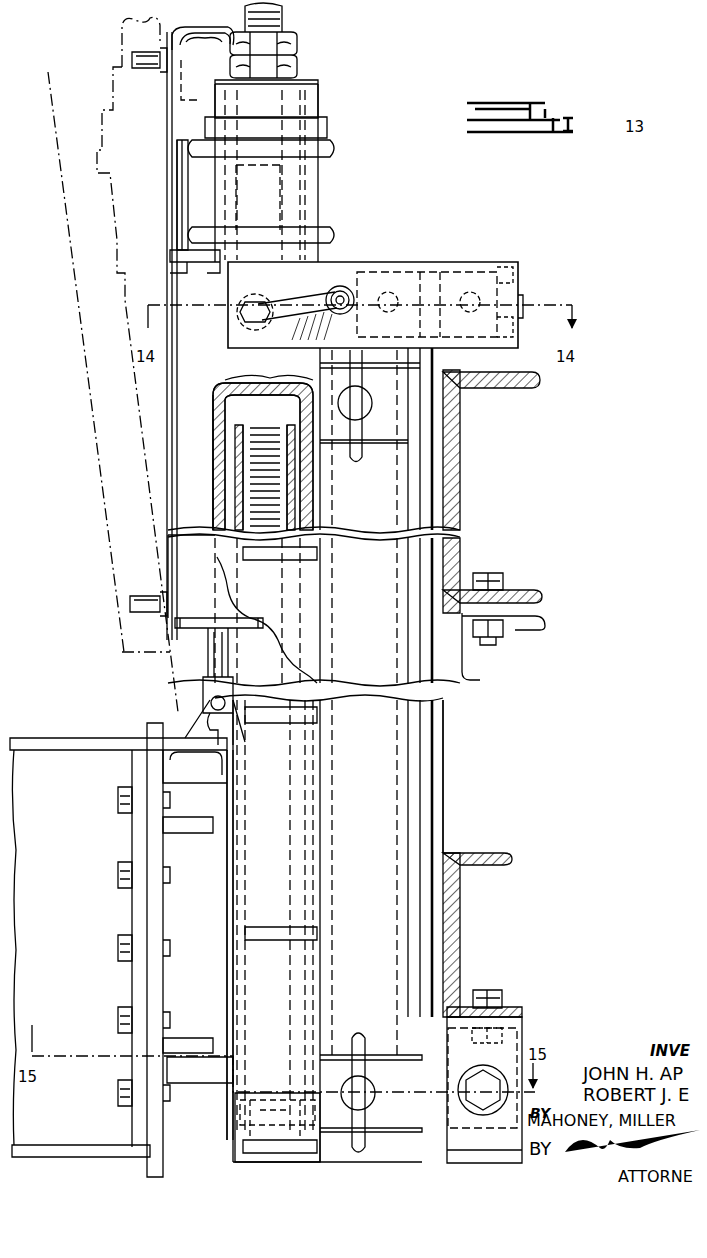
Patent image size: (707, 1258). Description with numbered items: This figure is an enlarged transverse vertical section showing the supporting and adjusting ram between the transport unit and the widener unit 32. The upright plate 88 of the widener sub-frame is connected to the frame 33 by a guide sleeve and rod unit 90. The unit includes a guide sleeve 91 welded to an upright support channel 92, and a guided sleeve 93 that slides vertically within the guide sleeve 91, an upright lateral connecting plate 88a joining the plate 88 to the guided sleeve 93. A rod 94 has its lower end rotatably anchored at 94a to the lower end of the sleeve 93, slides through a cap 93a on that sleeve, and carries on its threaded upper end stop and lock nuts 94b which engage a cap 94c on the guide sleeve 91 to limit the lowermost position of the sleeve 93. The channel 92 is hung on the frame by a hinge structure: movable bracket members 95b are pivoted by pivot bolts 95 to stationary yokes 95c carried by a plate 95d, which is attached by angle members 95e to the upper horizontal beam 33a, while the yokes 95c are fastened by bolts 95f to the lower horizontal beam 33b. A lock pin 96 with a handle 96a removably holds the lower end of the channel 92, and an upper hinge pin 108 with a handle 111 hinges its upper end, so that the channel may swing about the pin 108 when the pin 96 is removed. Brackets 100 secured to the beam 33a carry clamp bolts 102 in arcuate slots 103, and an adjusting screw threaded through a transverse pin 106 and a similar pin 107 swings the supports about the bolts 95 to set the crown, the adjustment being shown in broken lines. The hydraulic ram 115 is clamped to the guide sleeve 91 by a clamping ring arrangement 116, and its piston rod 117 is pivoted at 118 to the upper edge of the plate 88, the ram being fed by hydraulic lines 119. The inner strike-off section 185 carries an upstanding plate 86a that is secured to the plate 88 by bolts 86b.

The widener unit 32 is at (60, 736).
The frame 33 is at (540, 590).
The upper horizontal beam 33a is at (462, 478).
The lower horizontal beam 33b is at (462, 915).
The upstanding plate 86a is at (138, 745).
The bolts 86b is at (118, 805).
The upright plate 88 is at (152, 895).
The lateral connecting plate 88a is at (216, 945).
The guide sleeve and rod unit 90 is at (208, 493).
The guide sleeve 91 is at (327, 107).
The upright support channel 92 is at (393, 800).
The guided sleeve 93 is at (305, 197).
The cap 93a is at (280, 163).
The rod 94 is at (265, 12).
The rotatable anchor 94a is at (285, 1150).
The stop and lock nuts 94b is at (300, 72).
The cap 94c is at (318, 82).
The pivot bolts 95 is at (490, 1083).
The bracket members 95b is at (383, 415).
The yokes 95c is at (505, 1040).
The plate 95d is at (446, 832).
The angle members 95e is at (462, 655).
The bolts 95f is at (497, 990).
The lock pin 96 is at (368, 1070).
The handle 96a is at (362, 1145).
The brackets 100 is at (350, 262).
The clamp bolts 102 is at (322, 318).
The arcuate slots 103 is at (288, 292).
The transverse pin 106 is at (388, 290).
The pin 107 is at (470, 290).
The upper hinge pin 108 is at (375, 398).
The handle 111 is at (365, 433).
The hydraulic ram 115 is at (180, 400).
The clamping ring arrangement 116 is at (330, 235).
The piston rod 117 is at (228, 652).
The pivot 118 is at (210, 710).
The hydraulic lines 119 is at (150, 60).
The inner section 185 is at (100, 1137).